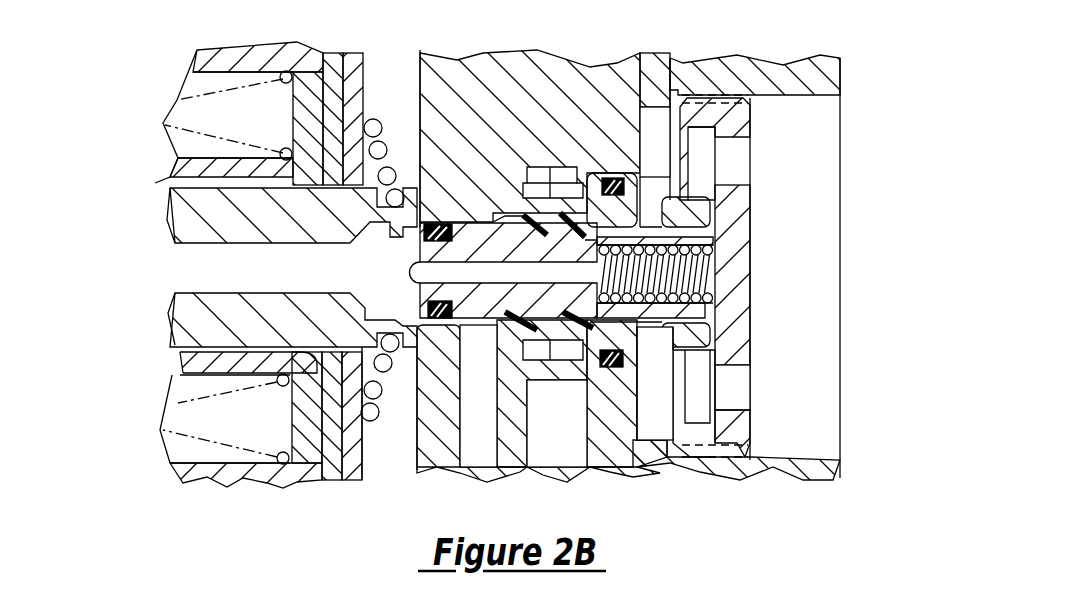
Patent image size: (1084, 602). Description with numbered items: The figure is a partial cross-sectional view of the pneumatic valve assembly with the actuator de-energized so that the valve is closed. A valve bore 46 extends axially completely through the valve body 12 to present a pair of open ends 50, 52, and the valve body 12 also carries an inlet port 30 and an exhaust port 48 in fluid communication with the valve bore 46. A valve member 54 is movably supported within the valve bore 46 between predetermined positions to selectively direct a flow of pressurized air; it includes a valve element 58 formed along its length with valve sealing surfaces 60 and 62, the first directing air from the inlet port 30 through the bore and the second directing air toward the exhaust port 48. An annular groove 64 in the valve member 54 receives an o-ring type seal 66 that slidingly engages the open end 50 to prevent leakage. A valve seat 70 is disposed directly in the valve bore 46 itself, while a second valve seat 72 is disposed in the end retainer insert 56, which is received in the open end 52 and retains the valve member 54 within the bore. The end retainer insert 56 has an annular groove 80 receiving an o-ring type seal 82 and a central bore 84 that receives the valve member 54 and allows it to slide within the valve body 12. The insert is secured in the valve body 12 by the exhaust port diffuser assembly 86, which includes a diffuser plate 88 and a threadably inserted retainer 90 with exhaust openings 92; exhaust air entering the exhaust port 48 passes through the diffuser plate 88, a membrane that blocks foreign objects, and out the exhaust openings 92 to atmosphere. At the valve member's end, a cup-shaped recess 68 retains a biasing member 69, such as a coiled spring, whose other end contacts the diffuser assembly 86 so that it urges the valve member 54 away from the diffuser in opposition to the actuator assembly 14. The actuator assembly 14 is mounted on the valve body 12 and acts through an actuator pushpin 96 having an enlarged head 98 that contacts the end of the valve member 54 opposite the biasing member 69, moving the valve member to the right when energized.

The valve body 12 is at (840, 77).
The actuator assembly 14 is at (178, 188).
The inlet port 30 is at (569, 470).
The valve bore 46 is at (458, 222).
The exhaust port 48 is at (655, 119).
The open end 50 is at (390, 318).
The open end 52 is at (644, 177).
The valve member 54 is at (491, 212).
The end retainer insert 56 is at (543, 183).
The valve element 58 is at (558, 218).
The valve sealing surface 60 is at (498, 320).
The valve sealing surface 62 is at (609, 173).
The annular groove 64 is at (417, 153).
The o-ring type seal 66 is at (429, 223).
The cup-shaped recess 68 is at (750, 305).
The biasing member 69 is at (714, 240).
The valve seat 70 is at (538, 326).
The valve seat 72 is at (612, 360).
The annular groove 80 is at (603, 360).
The o-ring type seal 82 is at (612, 365).
The central bore 84 is at (716, 229).
The exhaust port diffuser assembly 86 is at (757, 120).
The diffuser plate 88 is at (738, 404).
The retainer 90 is at (750, 345).
The exhaust openings 92 is at (742, 395).
The actuator pushpin 96 is at (229, 280).
The enlarged head 98 is at (383, 280).